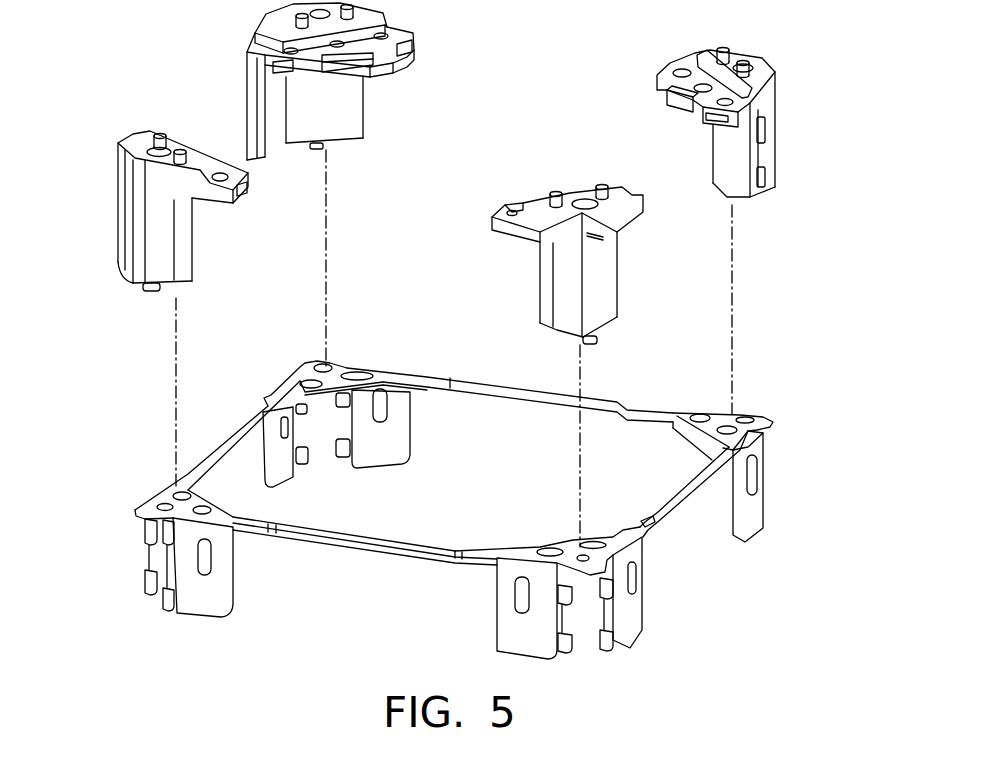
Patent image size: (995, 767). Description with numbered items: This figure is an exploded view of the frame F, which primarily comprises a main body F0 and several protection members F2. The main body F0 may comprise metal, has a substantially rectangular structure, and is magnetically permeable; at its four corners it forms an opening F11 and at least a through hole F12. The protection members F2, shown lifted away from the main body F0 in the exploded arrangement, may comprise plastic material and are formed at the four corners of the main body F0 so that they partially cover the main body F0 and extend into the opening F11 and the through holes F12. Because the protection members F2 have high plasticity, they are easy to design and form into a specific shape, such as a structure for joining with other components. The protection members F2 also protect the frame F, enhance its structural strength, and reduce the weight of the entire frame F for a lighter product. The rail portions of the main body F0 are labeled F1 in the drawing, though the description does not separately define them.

The frame F is at (75, 58).
The main body F0 is at (452, 493).
The frame rail F1 is at (240, 418).
The protection members F2 is at (197, 147).
The opening F11 is at (322, 425).
The through hole F12 is at (547, 547).